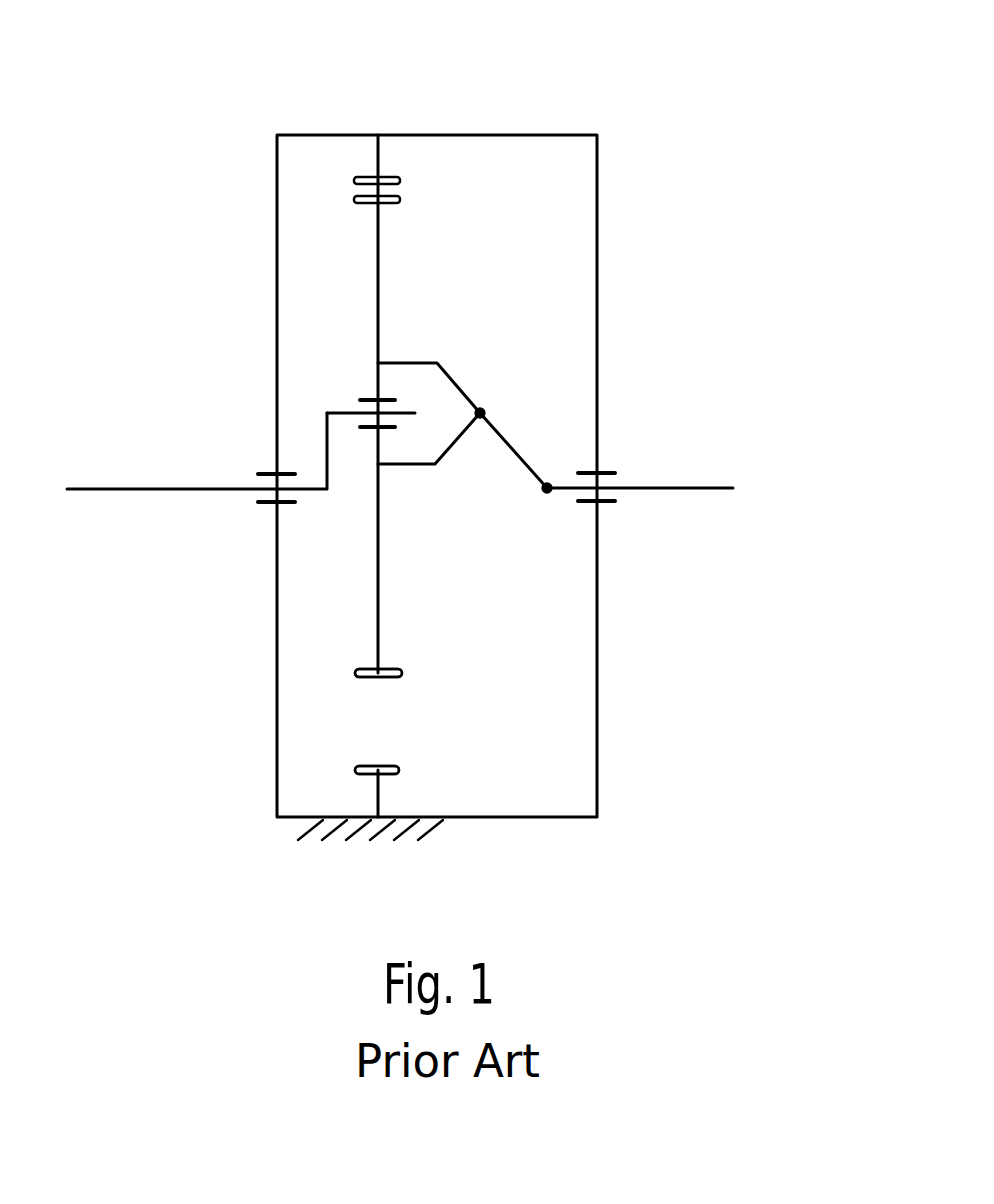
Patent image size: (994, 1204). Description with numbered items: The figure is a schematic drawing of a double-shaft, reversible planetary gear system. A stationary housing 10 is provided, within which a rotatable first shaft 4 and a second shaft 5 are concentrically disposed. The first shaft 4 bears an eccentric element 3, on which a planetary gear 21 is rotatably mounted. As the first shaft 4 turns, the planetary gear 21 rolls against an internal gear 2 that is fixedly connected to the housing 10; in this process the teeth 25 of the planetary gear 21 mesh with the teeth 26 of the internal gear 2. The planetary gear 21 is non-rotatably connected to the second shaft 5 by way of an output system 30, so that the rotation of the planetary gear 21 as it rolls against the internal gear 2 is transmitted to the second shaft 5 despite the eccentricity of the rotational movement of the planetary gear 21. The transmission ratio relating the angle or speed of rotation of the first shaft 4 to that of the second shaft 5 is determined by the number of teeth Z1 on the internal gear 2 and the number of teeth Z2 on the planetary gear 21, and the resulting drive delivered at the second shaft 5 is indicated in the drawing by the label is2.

The stationary housing 10 is at (620, 116).
The internal gear 2 is at (400, 152).
The planetary gear 21 is at (398, 284).
The eccentric element 3 is at (316, 435).
The first shaft 4 is at (175, 505).
The second shaft 5 is at (684, 500).
The output system 30 is at (537, 440).
The teeth of the planetary gear 25 is at (370, 679).
The teeth of the internal gear 26 is at (383, 766).
The number of teeth on the planetary gear Z2 is at (405, 673).
The number of teeth on the internal gear Z1 is at (400, 770).
The output shaft label is2 is at (763, 487).